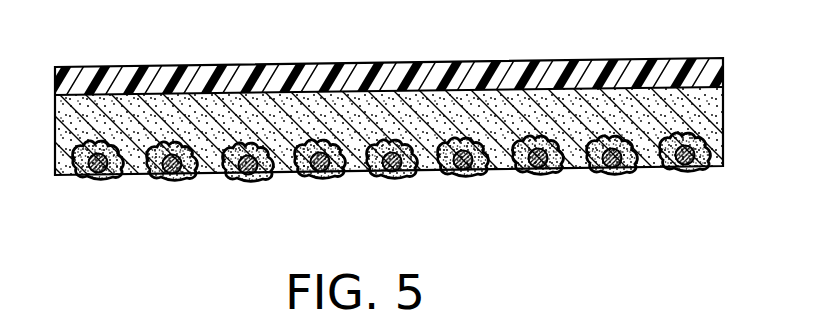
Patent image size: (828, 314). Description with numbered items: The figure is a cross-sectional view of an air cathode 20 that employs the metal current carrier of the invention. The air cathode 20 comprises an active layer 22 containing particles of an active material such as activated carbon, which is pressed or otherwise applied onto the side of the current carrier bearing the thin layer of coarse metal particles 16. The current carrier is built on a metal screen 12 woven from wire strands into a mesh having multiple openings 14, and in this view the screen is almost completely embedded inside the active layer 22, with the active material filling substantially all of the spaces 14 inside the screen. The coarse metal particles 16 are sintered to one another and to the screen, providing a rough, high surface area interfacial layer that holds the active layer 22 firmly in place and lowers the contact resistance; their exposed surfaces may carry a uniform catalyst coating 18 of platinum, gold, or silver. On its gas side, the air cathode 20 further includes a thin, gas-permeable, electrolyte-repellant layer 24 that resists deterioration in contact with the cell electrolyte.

The air cathode 20 is at (384, 114).
The gas-permeable, electrolyte-repellant layer 24 is at (336, 68).
The active layer 22 is at (384, 146).
The openings 14 is at (577, 160).
The metal screen 12 is at (319, 170).
The layer of coarse metal particles 16 is at (478, 170).
The catalyst coating 18 is at (233, 172).